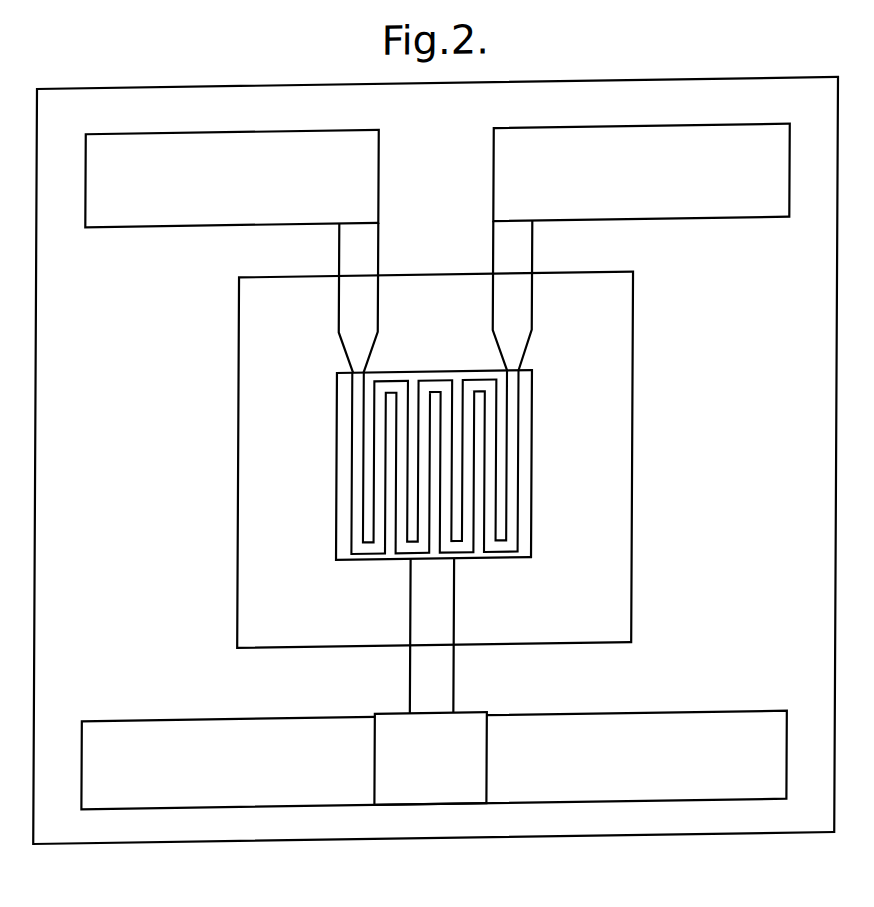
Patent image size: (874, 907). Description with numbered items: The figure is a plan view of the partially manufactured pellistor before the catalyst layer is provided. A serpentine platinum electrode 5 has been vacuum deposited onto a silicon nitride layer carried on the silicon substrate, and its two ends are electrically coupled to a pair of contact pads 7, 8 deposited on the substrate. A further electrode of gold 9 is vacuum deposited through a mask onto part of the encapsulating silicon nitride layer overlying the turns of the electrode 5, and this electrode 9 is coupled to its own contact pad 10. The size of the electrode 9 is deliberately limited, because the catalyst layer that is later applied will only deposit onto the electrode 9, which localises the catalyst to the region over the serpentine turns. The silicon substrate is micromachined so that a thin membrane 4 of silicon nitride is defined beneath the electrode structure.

The membrane 4 is at (276, 362).
The serpentine platinum electrode 5 is at (352, 446).
The contact pad 7 is at (597, 136).
The contact pad 8 is at (196, 145).
The gold electrode 9 is at (338, 516).
The contact pad 10 is at (152, 797).